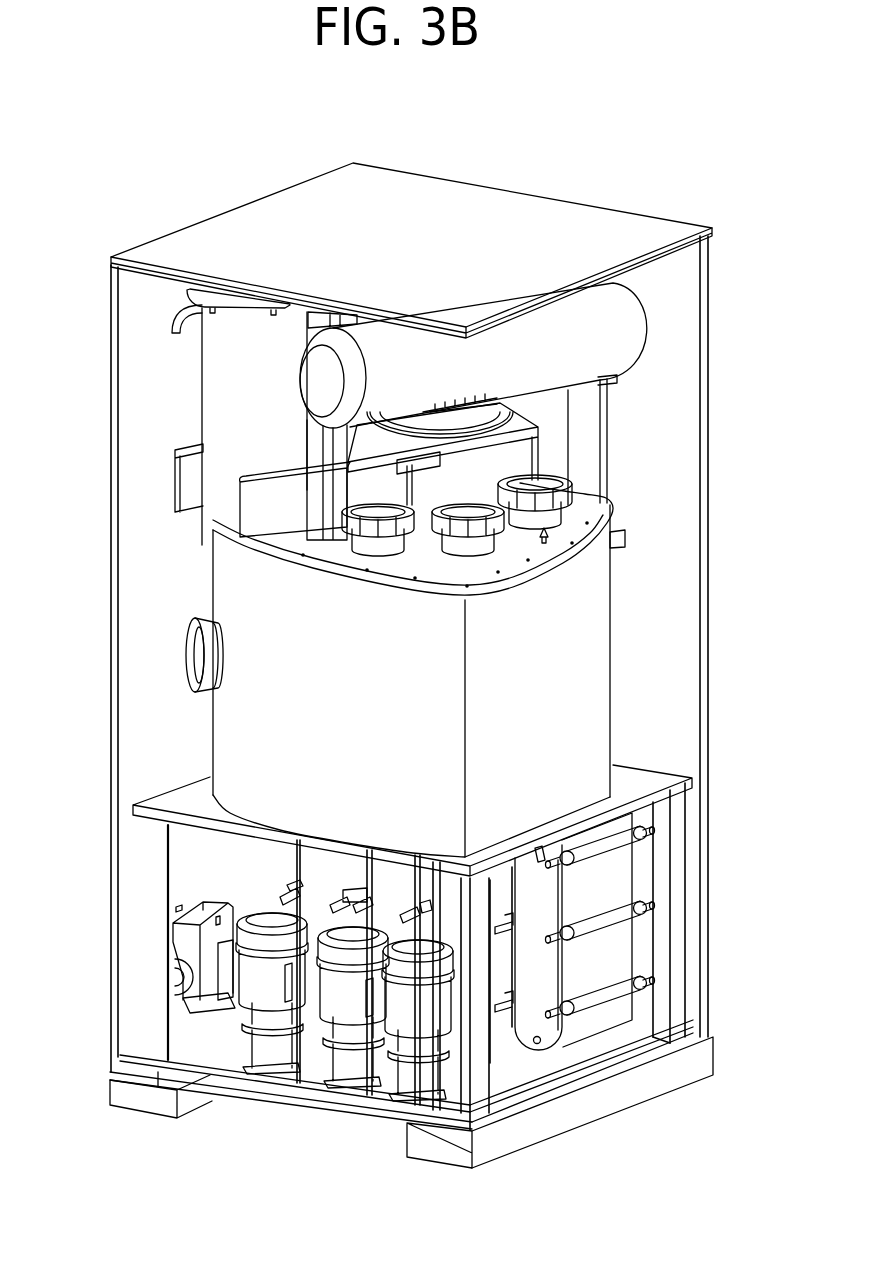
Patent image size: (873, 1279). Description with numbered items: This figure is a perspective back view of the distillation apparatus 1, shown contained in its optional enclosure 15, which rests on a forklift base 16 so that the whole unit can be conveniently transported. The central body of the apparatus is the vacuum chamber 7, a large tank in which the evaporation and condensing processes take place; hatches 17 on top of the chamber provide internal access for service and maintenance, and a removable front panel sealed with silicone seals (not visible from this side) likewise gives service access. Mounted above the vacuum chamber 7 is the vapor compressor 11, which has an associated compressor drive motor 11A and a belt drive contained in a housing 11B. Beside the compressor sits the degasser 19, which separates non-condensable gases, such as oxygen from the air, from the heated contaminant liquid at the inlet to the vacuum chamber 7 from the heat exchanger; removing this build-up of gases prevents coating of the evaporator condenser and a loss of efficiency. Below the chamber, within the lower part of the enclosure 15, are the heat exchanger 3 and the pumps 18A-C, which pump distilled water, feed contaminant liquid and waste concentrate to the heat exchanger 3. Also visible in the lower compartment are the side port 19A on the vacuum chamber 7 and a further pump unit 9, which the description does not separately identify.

The distillation apparatus 1 is at (545, 169).
The enclosure 15 is at (248, 237).
The vapor compressor 11 is at (617, 337).
The compressor drive motor 11A is at (475, 419).
The housing 11B is at (500, 457).
The degasser 19 is at (248, 372).
The side port 19A is at (196, 681).
The vacuum chamber 7 is at (580, 730).
The hatches 17 is at (390, 541).
The heat exchanger 3 is at (622, 877).
The pump 9 is at (202, 942).
The pumps 18A-C is at (418, 1008).
The forklift base 16 is at (493, 1152).